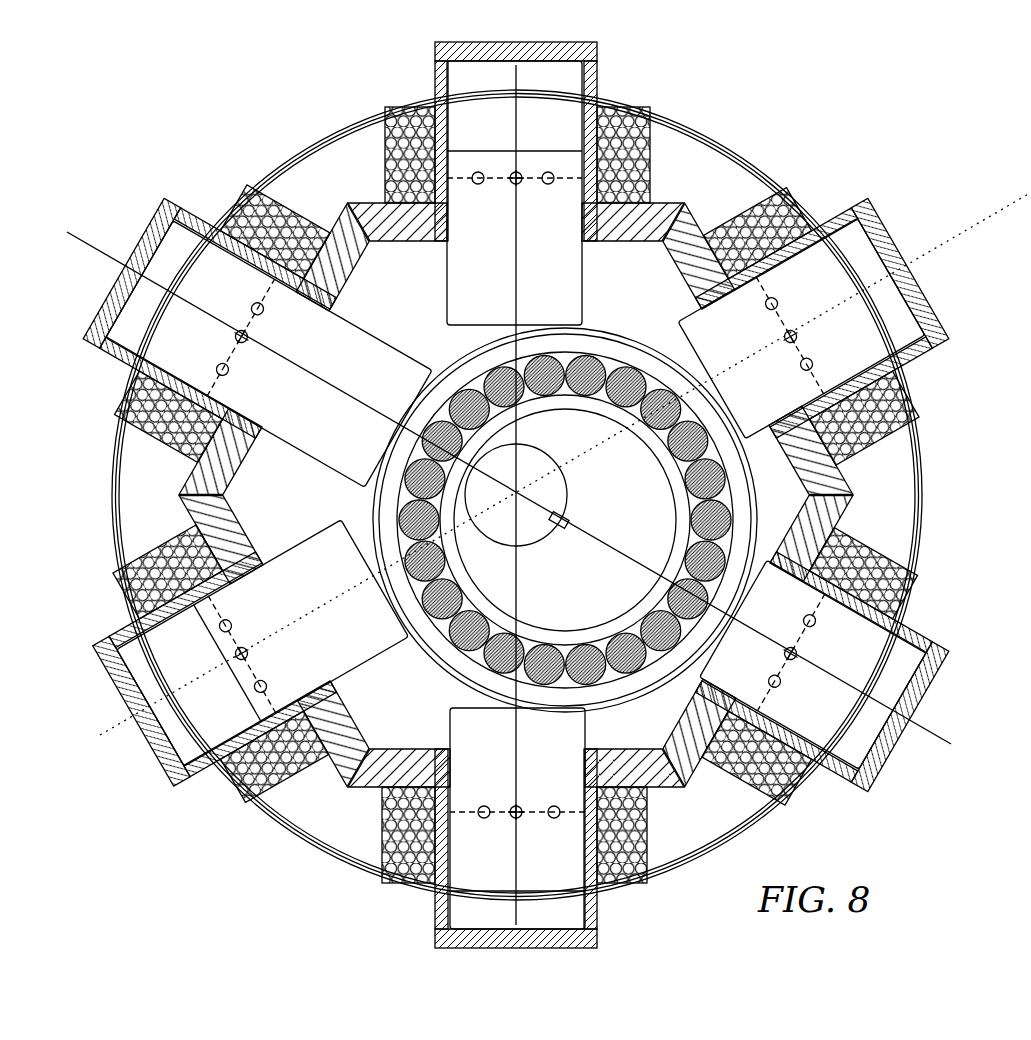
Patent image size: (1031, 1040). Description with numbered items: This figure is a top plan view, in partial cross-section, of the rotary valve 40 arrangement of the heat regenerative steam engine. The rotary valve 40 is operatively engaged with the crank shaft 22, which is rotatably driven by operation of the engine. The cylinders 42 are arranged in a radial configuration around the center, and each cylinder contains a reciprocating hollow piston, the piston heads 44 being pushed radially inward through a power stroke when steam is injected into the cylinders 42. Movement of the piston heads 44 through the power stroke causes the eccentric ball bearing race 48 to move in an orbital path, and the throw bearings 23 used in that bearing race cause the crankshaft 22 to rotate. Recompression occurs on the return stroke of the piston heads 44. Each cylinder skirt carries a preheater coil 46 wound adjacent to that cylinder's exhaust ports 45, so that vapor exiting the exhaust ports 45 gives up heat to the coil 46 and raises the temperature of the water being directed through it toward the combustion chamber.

The crank shaft 22 is at (560, 483).
The throw bearings 23 is at (665, 470).
The rotary valve 40 is at (798, 84).
The cylinders 42 is at (592, 90).
The piston heads 44 is at (567, 270).
The exhaust ports 45 is at (445, 185).
The preheater coils 46 is at (385, 164).
The eccentric ball bearing race 48 is at (462, 368).